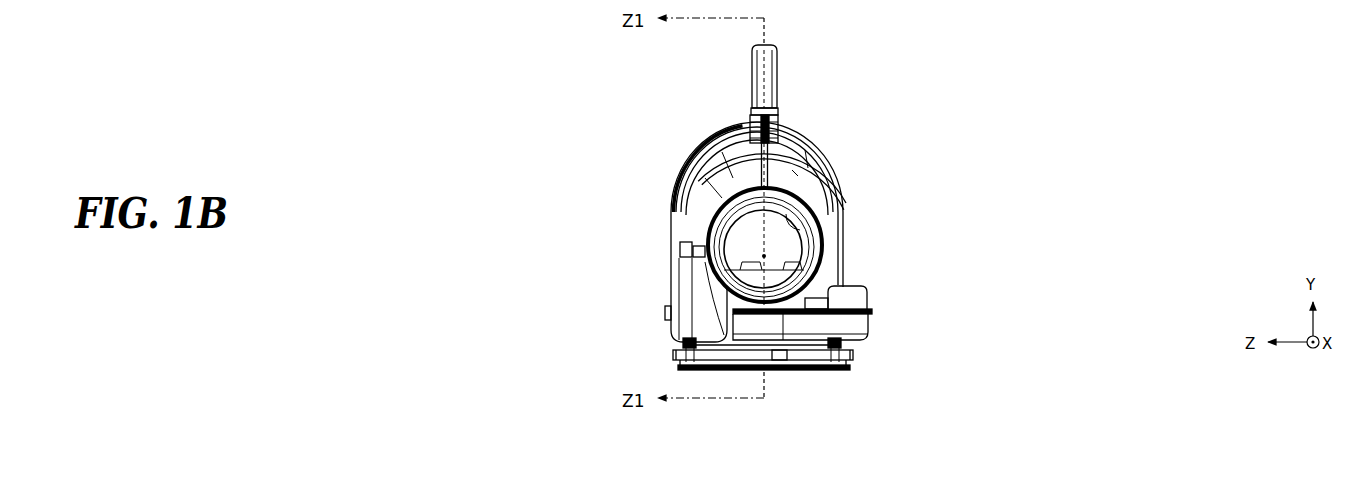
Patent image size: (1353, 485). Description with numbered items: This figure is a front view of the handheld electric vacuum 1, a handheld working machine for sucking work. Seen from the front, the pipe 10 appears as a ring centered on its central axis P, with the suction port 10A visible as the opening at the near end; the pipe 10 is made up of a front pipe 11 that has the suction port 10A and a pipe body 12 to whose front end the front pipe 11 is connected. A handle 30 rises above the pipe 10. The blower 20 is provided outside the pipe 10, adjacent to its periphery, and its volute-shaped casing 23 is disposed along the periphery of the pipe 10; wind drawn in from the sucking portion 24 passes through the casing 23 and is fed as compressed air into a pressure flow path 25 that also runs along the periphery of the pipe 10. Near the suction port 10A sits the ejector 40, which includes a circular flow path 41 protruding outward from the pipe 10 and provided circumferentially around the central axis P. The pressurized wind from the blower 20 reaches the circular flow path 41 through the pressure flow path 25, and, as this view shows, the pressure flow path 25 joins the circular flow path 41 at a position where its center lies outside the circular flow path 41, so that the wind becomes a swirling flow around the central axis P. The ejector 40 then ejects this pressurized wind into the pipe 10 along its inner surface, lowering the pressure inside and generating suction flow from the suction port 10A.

The handheld electric vacuum 1 is at (903, 78).
The pipe 10 is at (737, 192).
The suction port 10A is at (832, 224).
The front pipe 11 is at (707, 217).
The pipe body 12 is at (808, 163).
The blower 20 is at (877, 318).
The casing 23 is at (857, 324).
The sucking portion 24 is at (797, 370).
The pressure flow path 25 is at (669, 276).
The handle 30 is at (784, 73).
The ejector 40 is at (850, 240).
The circular flow path 41 is at (697, 152).
The central axis P is at (766, 256).